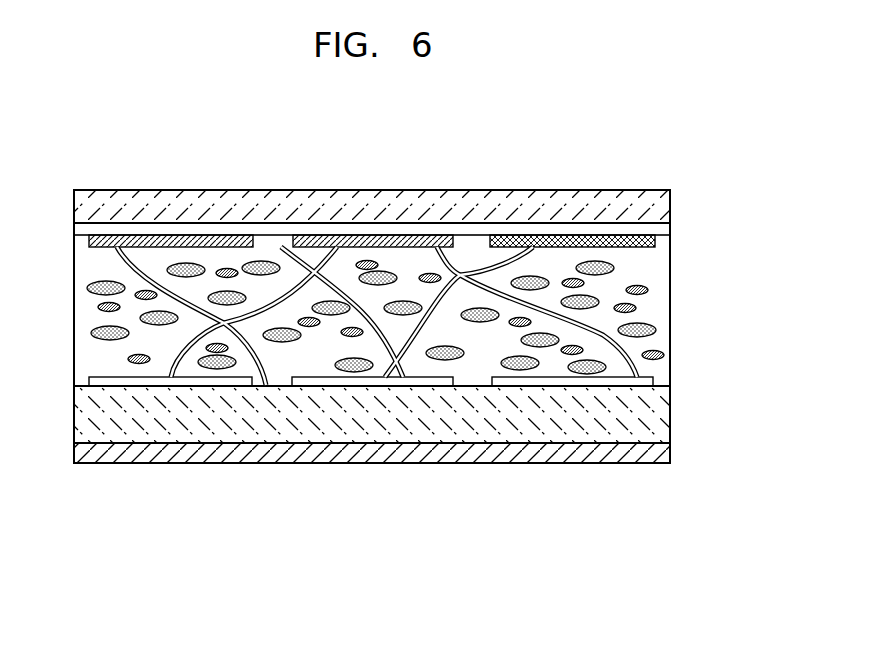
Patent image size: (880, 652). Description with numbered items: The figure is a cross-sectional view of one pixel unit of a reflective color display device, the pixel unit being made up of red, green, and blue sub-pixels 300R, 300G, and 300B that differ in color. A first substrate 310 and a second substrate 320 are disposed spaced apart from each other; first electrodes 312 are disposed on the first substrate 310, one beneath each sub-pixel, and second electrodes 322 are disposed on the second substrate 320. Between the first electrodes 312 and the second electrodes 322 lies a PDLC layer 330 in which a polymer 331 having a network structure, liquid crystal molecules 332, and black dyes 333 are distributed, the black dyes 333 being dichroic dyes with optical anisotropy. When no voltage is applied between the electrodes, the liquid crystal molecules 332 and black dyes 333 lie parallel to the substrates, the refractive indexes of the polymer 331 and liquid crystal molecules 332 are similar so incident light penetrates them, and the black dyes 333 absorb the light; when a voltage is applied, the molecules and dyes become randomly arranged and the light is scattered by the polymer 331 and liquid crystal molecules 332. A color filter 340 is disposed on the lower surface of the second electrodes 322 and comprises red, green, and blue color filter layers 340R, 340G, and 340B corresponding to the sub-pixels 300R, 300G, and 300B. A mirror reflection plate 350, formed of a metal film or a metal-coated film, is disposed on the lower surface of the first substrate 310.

The second substrate 320 is at (670, 212).
The second electrodes 322 is at (670, 233).
The color filter 340 is at (372, 174).
The red color filter layer 340R is at (174, 245).
The green color filter layer 340G is at (374, 245).
The blue color filter layer 340B is at (572, 195).
The PDLC layer 330 is at (444, 316).
The polymer 331 is at (597, 327).
The liquid crystal molecules 332 is at (657, 330).
The black dyes 333 is at (664, 355).
The first electrodes 312 is at (170, 380).
The first substrate 310 is at (670, 417).
The mirror reflection plate 350 is at (670, 455).
The red sub-pixel 300R is at (257, 511).
The green sub-pixel 300G is at (458, 511).
The blue sub-pixel 300B is at (662, 511).